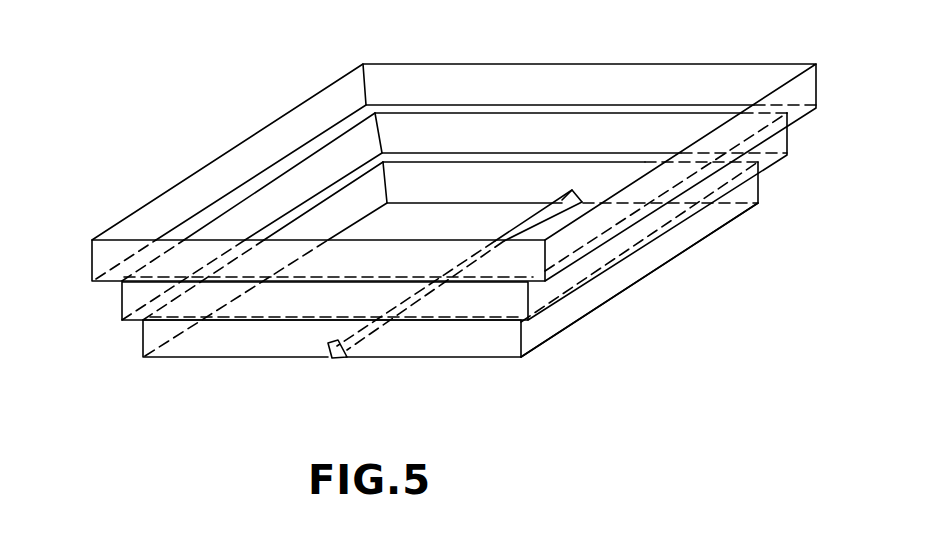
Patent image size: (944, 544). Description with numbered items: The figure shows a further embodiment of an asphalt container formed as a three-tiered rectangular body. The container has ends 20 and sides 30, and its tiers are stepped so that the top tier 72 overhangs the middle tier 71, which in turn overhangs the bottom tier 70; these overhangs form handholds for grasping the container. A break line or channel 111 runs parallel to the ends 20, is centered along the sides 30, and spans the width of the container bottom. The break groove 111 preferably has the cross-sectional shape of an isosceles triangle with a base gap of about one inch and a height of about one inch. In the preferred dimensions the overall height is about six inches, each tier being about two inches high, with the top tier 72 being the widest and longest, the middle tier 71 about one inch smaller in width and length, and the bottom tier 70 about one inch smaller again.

The end 20 is at (697, 228).
The side 30 is at (493, 303).
The bottom tier 70 is at (143, 337).
The middle tier 71 is at (122, 307).
The top tier 72 is at (92, 259).
The break line or channel 111 is at (330, 344).